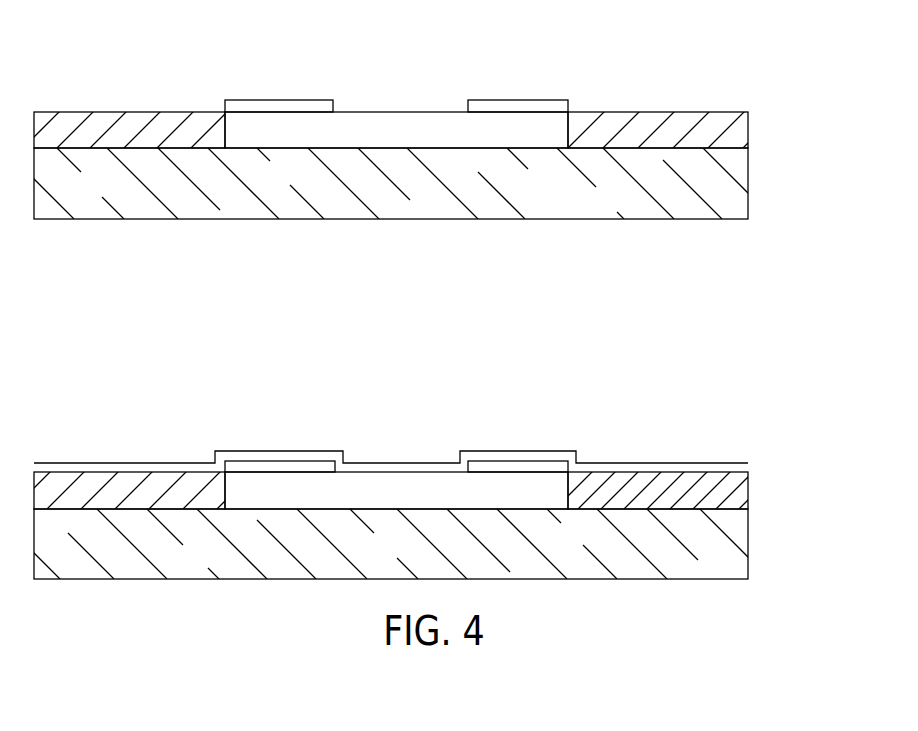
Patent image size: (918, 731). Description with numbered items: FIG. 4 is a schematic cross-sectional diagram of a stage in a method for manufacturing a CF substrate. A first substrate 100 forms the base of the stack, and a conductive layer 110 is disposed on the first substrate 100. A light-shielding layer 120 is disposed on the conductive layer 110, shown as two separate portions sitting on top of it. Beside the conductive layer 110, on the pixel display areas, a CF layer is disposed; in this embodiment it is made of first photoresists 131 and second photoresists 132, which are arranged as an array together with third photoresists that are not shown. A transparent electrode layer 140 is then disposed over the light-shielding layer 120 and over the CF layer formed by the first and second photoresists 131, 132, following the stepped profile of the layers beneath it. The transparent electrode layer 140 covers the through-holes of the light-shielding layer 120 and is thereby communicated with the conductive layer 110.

The first substrate 100 is at (702, 188).
The conductive layer 110 is at (388, 128).
The light-shielding layer 120 is at (292, 106).
The first photoresists 131 is at (120, 130).
The second photoresists 132 is at (622, 130).
The transparent electrode layer 140 is at (700, 466).